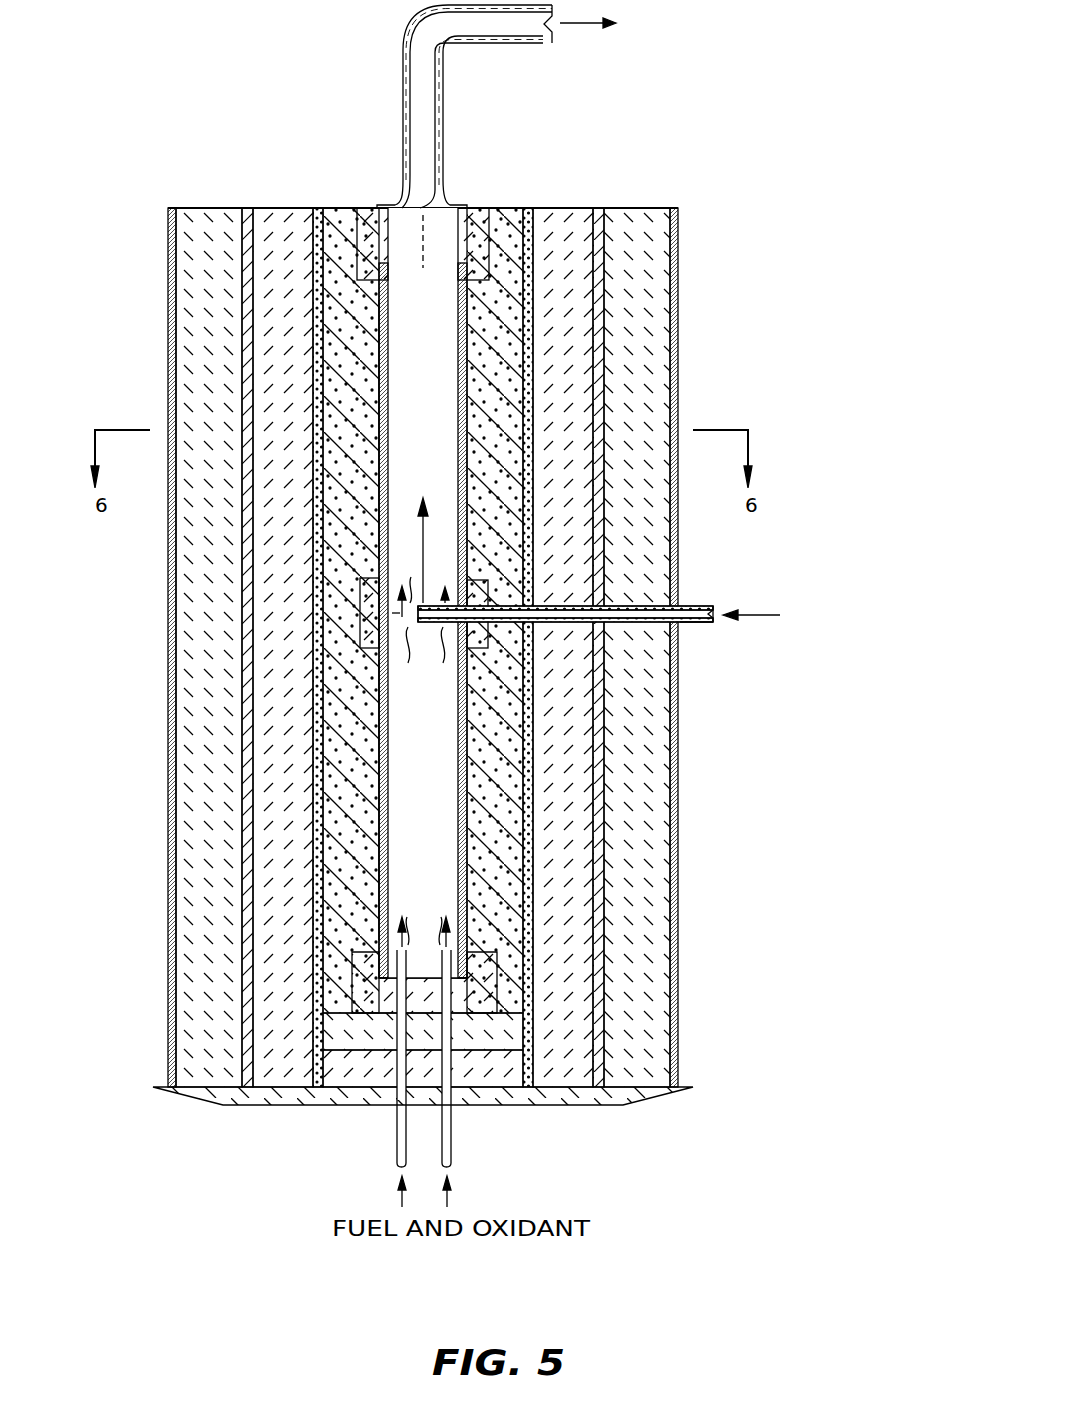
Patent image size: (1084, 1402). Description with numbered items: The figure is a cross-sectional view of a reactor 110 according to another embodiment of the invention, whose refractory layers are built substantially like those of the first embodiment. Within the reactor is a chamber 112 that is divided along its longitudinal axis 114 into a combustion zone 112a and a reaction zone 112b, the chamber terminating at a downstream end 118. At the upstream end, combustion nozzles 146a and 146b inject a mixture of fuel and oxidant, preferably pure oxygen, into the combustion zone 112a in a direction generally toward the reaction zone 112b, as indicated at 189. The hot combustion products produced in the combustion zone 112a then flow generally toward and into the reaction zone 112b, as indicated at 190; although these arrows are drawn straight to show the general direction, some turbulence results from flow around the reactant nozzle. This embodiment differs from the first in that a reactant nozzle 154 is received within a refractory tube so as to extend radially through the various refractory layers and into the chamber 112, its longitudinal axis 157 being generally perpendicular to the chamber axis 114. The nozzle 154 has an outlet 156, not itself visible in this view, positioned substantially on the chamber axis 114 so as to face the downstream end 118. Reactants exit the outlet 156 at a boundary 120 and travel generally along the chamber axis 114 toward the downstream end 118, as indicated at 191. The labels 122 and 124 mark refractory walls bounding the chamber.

The reactor 110 is at (708, 366).
The chamber 112 is at (449, 216).
The combustion zone 112a is at (452, 801).
The reaction zone 112b is at (450, 399).
The longitudinal axis of chamber 114 is at (401, 189).
The downstream end of chamber 118 is at (424, 216).
The boundary 120 is at (400, 612).
The electrode wall 122 is at (388, 736).
The electrode wall 124 is at (388, 446).
The combustion nozzle 146a is at (397, 1152).
The combustion nozzle 146b is at (451, 1156).
The reactant nozzle 154 is at (712, 605).
The outlet of nozzle 156 is at (428, 606).
The longitudinal axis of nozzle 157 is at (684, 626).
The direction of fuel and oxidant injection 189 is at (424, 919).
The flow of combustion products 190 is at (426, 658).
The direction of reactant flow 191 is at (425, 518).